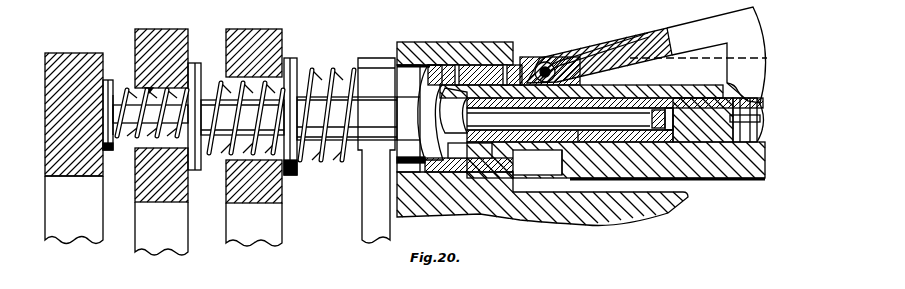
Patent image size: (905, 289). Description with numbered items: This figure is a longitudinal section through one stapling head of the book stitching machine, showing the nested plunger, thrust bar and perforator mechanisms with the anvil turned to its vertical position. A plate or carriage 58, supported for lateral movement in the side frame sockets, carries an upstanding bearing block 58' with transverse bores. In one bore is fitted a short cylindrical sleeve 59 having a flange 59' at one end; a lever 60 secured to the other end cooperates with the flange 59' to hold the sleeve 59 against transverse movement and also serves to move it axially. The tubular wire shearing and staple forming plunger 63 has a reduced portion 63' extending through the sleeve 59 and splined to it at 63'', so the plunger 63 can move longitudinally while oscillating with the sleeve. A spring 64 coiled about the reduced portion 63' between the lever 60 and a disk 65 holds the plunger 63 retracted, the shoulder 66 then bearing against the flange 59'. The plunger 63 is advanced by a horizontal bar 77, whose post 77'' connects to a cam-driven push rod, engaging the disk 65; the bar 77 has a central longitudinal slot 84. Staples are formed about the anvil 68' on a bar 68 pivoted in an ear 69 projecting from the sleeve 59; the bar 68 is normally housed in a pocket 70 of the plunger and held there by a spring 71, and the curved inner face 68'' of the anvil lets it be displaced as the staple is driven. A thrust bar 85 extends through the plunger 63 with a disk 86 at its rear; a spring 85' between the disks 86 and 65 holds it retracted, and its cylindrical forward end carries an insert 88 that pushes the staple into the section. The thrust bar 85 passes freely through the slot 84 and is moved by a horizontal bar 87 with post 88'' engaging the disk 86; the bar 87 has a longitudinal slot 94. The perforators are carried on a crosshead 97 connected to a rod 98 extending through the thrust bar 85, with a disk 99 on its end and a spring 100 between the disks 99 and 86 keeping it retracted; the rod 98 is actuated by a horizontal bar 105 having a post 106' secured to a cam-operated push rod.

The horizontal bar 105 is at (62, 57).
The post 106' is at (74, 220).
The disk 99 is at (100, 177).
The spring 100 is at (137, 80).
The longitudinal slot 94 is at (125, 92).
The rod 98 is at (123, 96).
The horizontal bar 87 is at (153, 29).
The post 88'' is at (161, 201).
The disk 86 is at (199, 83).
The horizontal bar 77 is at (265, 40).
The post 77'' is at (271, 203).
The spring 85' is at (243, 141).
The central longitudinal slot 84 is at (288, 54).
The disk 65 is at (292, 172).
The spring 64 is at (336, 137).
The reduced portion 63' is at (336, 87).
The lever 60 is at (373, 60).
The upstanding bearing block 58' is at (455, 38).
The plate or carriage 58 is at (542, 221).
The cylindrical sleeve 59 is at (433, 112).
The flange 59' is at (537, 170).
The tubular wire shearing and staple forming plunger 63 is at (630, 191).
The spline 63'' is at (457, 187).
The shoulder 66 is at (566, 173).
The ear 69 is at (530, 58).
The bar 68 is at (616, 42).
The anvil 68' is at (710, 55).
The curved inner face 68'' is at (777, 80).
The pocket 70 is at (673, 71).
The spring 71 is at (598, 37).
The thrust bar 85 is at (703, 153).
The insert 88 is at (762, 120).
The crosshead 97 is at (663, 128).